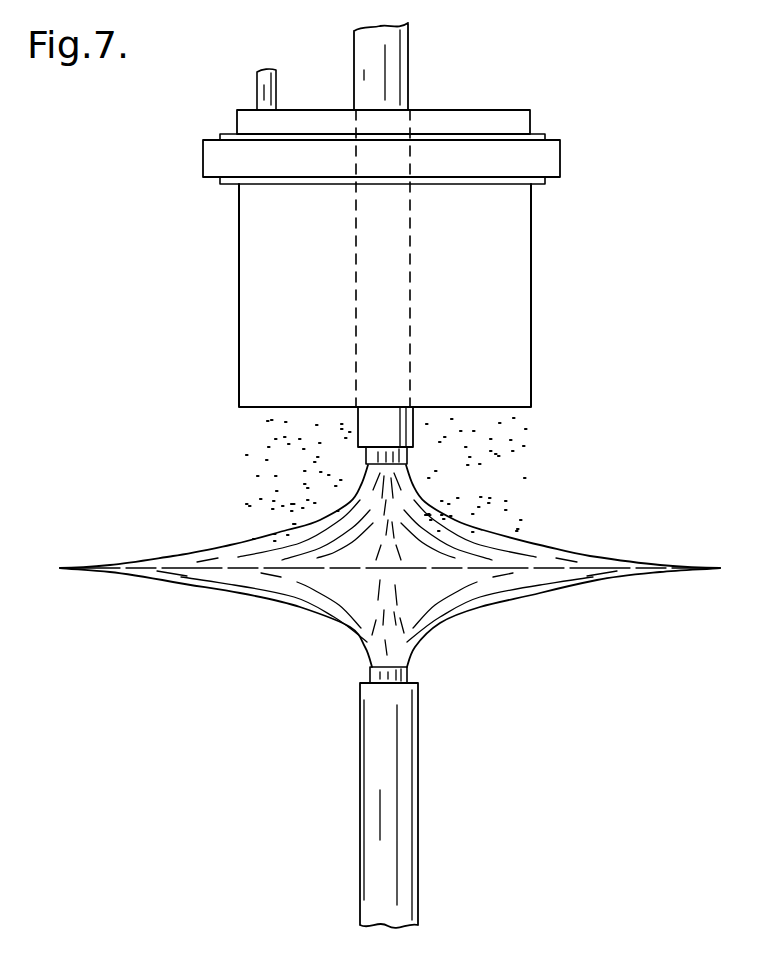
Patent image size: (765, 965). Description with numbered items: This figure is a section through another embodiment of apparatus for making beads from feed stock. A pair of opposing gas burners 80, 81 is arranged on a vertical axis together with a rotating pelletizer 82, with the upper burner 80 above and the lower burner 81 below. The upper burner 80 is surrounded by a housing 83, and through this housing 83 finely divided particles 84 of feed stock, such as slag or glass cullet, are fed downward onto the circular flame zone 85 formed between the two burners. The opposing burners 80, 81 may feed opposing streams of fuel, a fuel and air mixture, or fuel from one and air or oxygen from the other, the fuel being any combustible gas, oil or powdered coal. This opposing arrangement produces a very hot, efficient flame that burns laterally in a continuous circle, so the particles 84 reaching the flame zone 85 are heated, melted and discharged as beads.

The upper gas burner 80 is at (400, 435).
The lower gas burner 81 is at (392, 703).
The rotating pelletizer 82 is at (533, 112).
The housing 83 is at (503, 281).
The finely divided particles 84 is at (280, 447).
The circular flame zone 85 is at (510, 555).